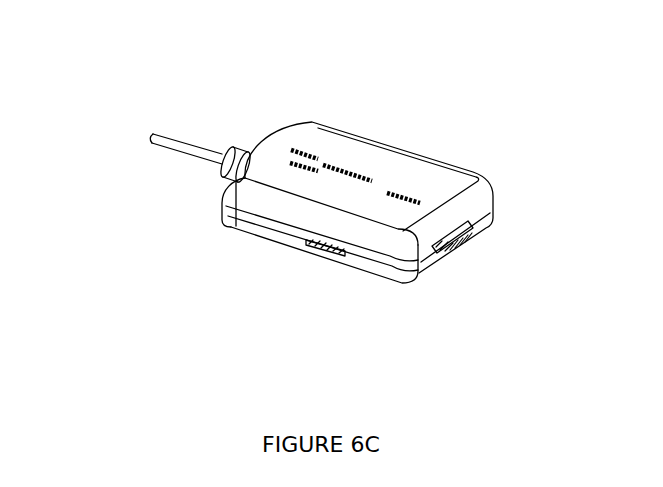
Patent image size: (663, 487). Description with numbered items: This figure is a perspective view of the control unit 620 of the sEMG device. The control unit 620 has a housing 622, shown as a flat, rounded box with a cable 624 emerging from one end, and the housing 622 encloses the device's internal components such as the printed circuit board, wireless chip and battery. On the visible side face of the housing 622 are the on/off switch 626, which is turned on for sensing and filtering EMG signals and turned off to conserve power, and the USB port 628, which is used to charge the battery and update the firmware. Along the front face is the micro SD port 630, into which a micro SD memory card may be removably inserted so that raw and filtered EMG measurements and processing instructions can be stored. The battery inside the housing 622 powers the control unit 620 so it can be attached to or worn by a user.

The control unit 620 is at (304, 156).
The housing 622 is at (469, 165).
The cable 624 is at (193, 156).
The on/off switch 626 is at (444, 248).
The USB port 628 is at (474, 235).
The micro SD port 630 is at (312, 249).